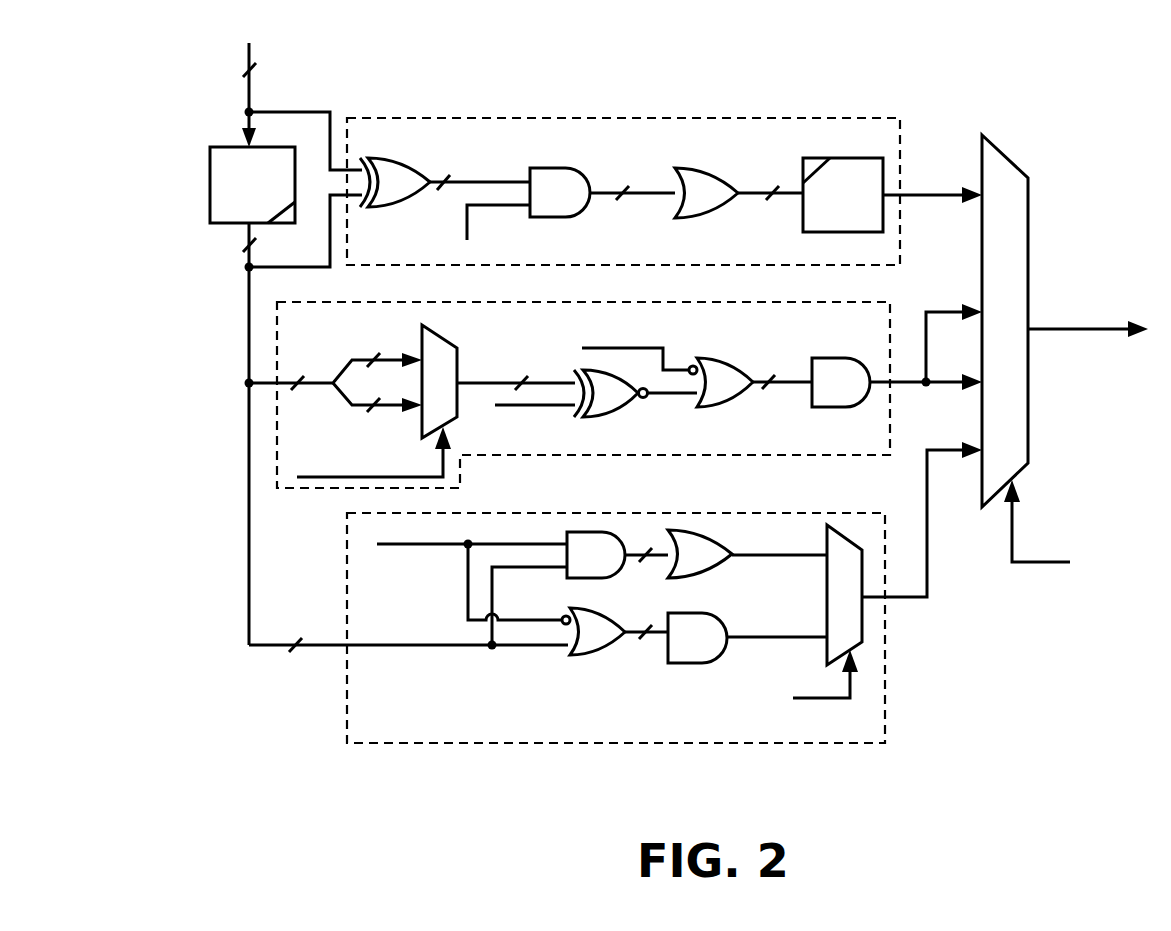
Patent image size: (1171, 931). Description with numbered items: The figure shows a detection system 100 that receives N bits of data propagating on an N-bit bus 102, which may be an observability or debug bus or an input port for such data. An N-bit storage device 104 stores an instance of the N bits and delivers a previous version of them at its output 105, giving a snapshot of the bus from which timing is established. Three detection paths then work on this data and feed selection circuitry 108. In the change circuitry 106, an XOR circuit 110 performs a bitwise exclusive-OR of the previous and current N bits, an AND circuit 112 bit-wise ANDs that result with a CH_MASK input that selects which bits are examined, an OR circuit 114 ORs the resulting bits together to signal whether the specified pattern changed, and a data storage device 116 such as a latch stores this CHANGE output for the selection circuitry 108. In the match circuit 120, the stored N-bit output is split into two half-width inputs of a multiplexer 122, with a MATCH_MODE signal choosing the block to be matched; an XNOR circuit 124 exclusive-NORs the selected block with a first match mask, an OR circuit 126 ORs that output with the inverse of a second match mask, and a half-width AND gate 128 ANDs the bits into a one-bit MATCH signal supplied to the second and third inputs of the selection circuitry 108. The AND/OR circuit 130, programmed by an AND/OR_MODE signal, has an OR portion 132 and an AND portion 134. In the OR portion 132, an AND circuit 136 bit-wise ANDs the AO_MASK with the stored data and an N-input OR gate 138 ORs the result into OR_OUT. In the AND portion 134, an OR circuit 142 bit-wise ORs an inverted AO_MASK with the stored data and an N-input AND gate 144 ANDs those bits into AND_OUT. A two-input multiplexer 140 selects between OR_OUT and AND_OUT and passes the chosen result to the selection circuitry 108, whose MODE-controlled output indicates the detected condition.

The detection system 100 is at (1072, 80).
The N-bit bus 102 is at (252, 90).
The N-bit storage device 104 is at (210, 182).
The output of the storage device 105 is at (249, 332).
The change circuitry 106 is at (632, 118).
The selection circuitry 108 is at (1030, 207).
The XOR circuit 110 is at (393, 157).
The AND circuit 112 is at (548, 167).
The OR circuit 114 is at (713, 168).
The data storage device 116 is at (842, 232).
The match circuit 120 is at (617, 302).
The multiplexer 122 is at (455, 342).
The XNOR circuit 124 is at (617, 413).
The OR circuit 126 is at (722, 358).
The N/2-bit AND gate 128 is at (837, 407).
The AND/OR circuit 130 is at (887, 662).
The OR portion 132 is at (445, 598).
The AND portion 134 is at (455, 670).
The AND circuit 136 is at (588, 532).
The N-input OR gate 138 is at (690, 530).
The two-input multiplexer 140 is at (825, 575).
The OR circuit 142 is at (570, 655).
The N-input AND gate 144 is at (695, 663).